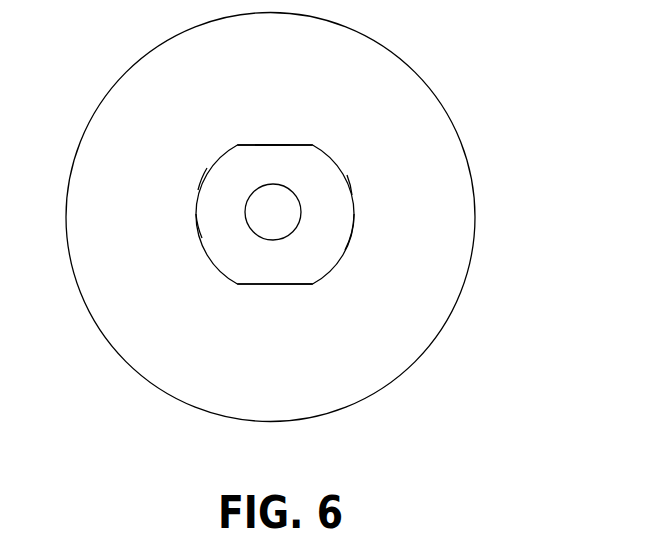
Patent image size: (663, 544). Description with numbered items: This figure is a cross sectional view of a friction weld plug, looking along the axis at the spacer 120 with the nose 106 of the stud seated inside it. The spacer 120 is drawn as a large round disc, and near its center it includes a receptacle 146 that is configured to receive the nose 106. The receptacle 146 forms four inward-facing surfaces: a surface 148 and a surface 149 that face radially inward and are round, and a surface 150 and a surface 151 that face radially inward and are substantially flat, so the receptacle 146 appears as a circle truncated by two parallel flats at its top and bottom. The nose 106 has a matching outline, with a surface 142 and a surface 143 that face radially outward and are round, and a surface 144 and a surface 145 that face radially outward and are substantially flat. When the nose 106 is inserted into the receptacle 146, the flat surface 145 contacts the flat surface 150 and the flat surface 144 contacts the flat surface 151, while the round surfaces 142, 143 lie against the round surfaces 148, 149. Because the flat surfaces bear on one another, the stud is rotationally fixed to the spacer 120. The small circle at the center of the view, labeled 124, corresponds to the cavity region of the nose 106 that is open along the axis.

The spacer 120 is at (162, 58).
The nose 106 is at (315, 165).
The receptacle 146 is at (352, 157).
The surface 145 is at (298, 143).
The surface 150 is at (255, 146).
The surface 148 is at (207, 168).
The surface 149 is at (347, 175).
The central bore 124 is at (282, 210).
The surface 143 is at (352, 215).
The surface 142 is at (202, 238).
The surface 151 is at (242, 283).
The surface 144 is at (298, 285).